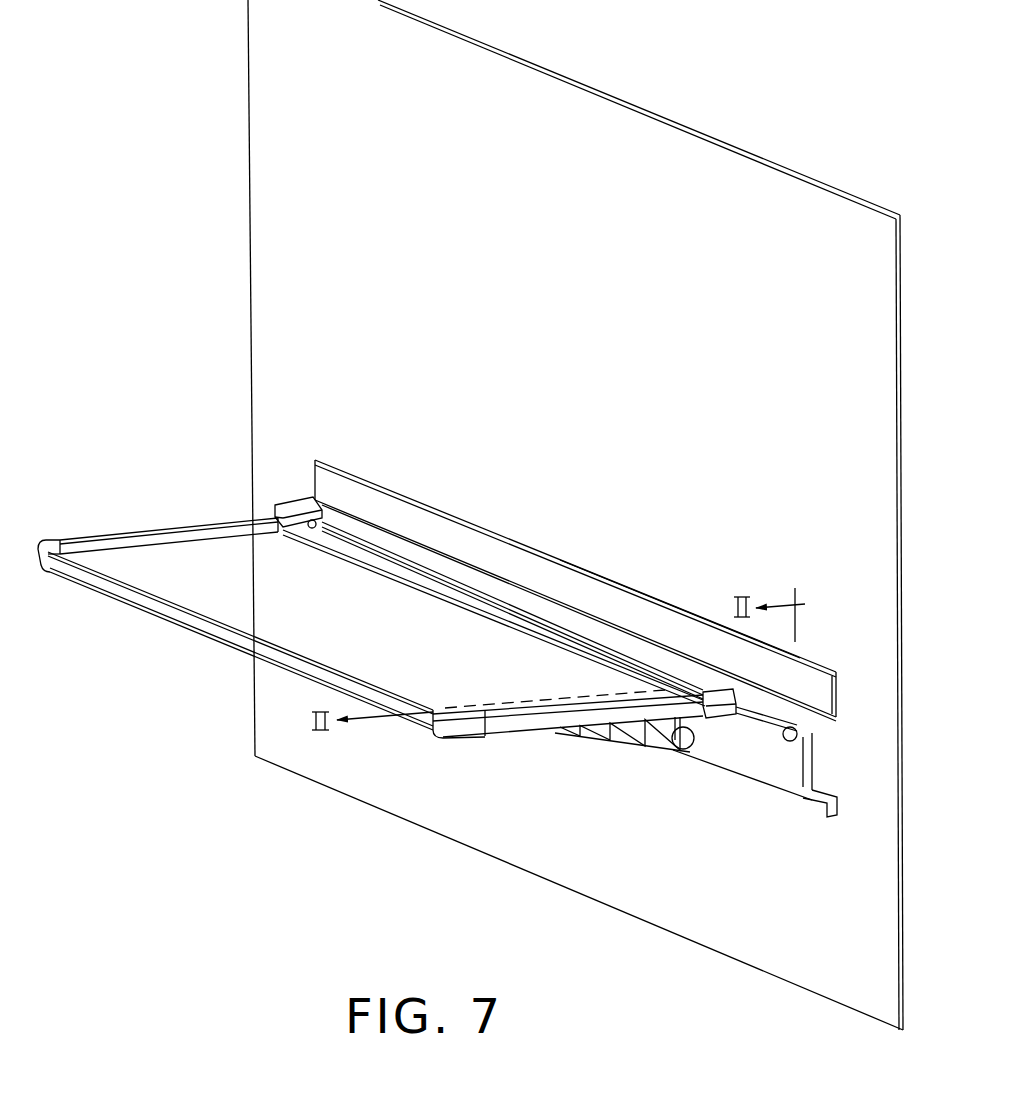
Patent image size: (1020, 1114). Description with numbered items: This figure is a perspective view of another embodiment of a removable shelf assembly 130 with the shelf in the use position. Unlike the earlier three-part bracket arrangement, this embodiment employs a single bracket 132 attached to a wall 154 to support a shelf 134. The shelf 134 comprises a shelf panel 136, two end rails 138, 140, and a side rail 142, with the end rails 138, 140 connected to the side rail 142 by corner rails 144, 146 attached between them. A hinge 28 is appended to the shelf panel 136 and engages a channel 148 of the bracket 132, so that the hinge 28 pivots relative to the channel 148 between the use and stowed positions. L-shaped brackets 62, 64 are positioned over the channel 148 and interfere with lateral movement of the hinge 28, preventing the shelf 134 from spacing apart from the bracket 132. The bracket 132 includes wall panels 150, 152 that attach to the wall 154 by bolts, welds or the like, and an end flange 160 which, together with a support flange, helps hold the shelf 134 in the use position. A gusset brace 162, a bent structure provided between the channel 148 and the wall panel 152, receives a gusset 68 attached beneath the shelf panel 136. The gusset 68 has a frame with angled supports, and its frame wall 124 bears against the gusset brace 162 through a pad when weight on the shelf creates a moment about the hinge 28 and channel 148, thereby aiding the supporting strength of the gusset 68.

The wall 154 is at (567, 251).
The removable shelf assembly 130 is at (67, 428).
The bracket 132 is at (455, 510).
The wall panel 150 is at (645, 615).
The shelf 134 is at (147, 620).
The shelf panel 136 is at (367, 629).
The end rail 138 is at (122, 530).
The end rail 140 is at (535, 718).
The side rail 142 is at (227, 633).
The corner rail 144 is at (45, 535).
The corner rail 146 is at (463, 723).
The channel 148 is at (497, 603).
The hinge 28 is at (543, 627).
The L-shaped bracket 62 is at (312, 520).
The L-shaped bracket 64 is at (742, 693).
The gusset 68 is at (622, 748).
The second frame wall 124 is at (690, 740).
The end flange 160 is at (757, 727).
The gusset brace 162 is at (802, 781).
The wall panel 152 is at (826, 812).